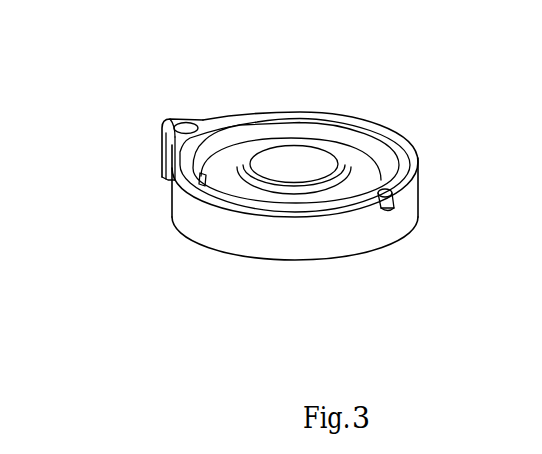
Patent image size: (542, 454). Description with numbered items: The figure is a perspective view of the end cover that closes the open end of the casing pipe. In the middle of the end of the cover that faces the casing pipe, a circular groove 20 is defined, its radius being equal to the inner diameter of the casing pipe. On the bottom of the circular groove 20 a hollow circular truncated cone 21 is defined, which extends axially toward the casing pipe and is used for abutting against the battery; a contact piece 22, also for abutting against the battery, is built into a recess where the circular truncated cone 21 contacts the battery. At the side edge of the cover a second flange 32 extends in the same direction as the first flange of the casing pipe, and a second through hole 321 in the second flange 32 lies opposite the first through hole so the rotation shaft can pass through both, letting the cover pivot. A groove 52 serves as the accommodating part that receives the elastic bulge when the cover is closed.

The circular groove 20 is at (228, 143).
The hollow circular truncated cone 21 is at (357, 163).
The contact piece 22 is at (300, 155).
The second flange 32 is at (157, 158).
The second through hole 321 is at (124, 26).
The groove 52 is at (390, 197).